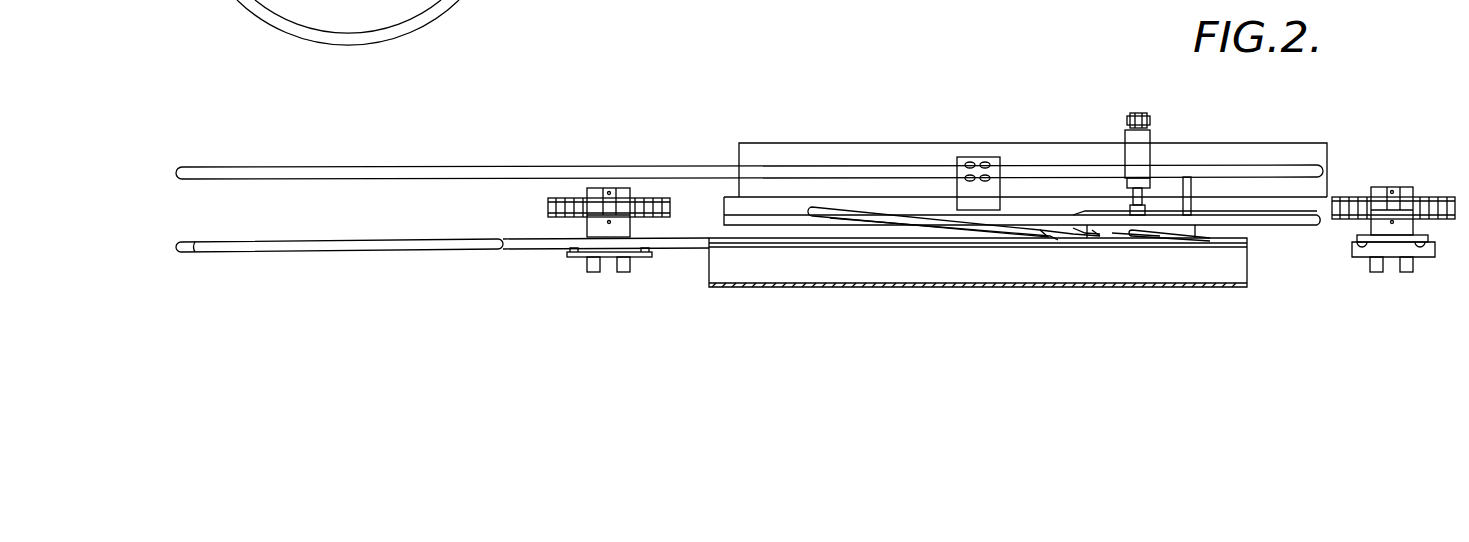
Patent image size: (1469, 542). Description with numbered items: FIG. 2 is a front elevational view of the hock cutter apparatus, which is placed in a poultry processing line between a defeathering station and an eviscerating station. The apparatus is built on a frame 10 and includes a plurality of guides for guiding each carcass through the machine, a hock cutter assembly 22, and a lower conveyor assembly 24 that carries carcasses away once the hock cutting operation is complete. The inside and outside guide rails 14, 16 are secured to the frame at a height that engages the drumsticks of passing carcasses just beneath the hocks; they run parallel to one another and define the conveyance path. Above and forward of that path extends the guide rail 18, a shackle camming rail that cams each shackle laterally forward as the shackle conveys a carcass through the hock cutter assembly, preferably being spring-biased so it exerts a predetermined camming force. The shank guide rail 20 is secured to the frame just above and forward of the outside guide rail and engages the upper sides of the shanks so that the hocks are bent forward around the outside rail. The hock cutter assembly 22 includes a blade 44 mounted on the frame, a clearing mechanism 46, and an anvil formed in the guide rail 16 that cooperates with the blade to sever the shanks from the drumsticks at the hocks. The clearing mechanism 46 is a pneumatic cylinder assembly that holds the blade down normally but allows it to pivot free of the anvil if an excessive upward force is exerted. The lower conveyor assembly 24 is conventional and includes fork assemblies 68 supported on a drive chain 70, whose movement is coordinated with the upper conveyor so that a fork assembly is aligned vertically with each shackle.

The frame 10 is at (913, 141).
The inside guide rail 14 is at (183, 243).
The outside guide rail 16 is at (393, 245).
The shackle camming rail 18 is at (428, 172).
The shank guide rail 20 is at (912, 220).
The hock cutter assembly 22 is at (1052, 235).
The lower conveyor assembly 24 is at (1373, 178).
The blade 44 is at (1093, 230).
The clearing mechanism 46 is at (1125, 140).
The fork assembly 68 is at (577, 263).
The drive chain 70 is at (662, 203).